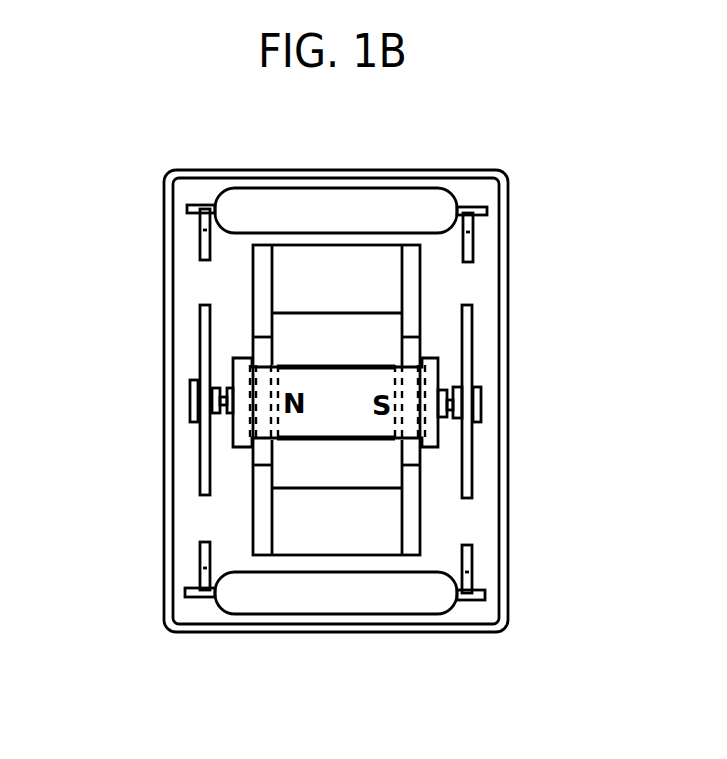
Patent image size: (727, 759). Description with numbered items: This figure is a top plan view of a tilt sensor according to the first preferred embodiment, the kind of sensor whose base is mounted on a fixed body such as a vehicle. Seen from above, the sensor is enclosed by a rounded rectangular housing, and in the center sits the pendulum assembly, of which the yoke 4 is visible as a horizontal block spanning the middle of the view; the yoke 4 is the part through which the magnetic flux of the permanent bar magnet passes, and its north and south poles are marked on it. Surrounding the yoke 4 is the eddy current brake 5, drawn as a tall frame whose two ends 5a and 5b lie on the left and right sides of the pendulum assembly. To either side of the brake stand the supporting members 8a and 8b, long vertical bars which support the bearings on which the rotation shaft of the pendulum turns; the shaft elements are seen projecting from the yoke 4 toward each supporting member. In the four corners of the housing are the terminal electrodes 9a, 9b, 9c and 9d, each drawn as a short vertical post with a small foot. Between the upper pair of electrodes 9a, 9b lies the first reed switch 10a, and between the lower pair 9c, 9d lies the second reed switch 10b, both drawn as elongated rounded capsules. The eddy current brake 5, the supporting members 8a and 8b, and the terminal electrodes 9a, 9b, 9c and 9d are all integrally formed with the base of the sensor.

The yoke 4 is at (240, 422).
The eddy current brake 5 is at (327, 528).
The end of eddy current brake 5a is at (262, 500).
The end of eddy current brake 5b is at (410, 498).
The supporting member 8a is at (205, 330).
The supporting member 8b is at (468, 333).
The terminal electrode 9a is at (203, 242).
The terminal electrode 9b is at (468, 244).
The terminal electrode 9c is at (205, 558).
The terminal electrode 9d is at (470, 562).
The reed switch 10a is at (333, 203).
The reed switch 10b is at (337, 603).